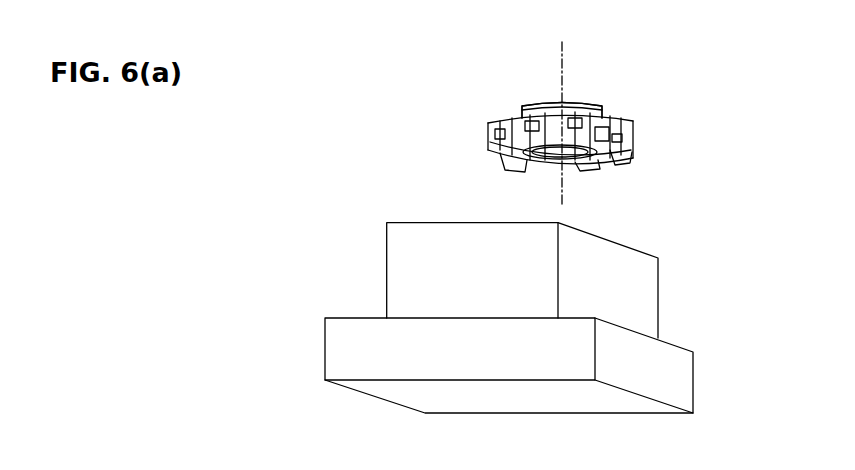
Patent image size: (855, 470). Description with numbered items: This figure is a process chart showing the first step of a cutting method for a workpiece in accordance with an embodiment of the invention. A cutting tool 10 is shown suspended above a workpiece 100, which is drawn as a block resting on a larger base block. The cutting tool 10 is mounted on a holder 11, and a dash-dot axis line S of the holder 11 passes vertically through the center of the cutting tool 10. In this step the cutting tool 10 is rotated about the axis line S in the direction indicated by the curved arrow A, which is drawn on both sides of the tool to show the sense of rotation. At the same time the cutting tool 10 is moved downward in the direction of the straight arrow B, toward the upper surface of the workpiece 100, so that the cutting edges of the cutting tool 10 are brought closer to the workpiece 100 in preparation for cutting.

The cutting tool 10 is at (622, 108).
The holder 11 is at (540, 92).
The workpiece 100 is at (372, 297).
The axis line S is at (562, 52).
The arrow A is at (483, 125).
The arrow B is at (482, 150).